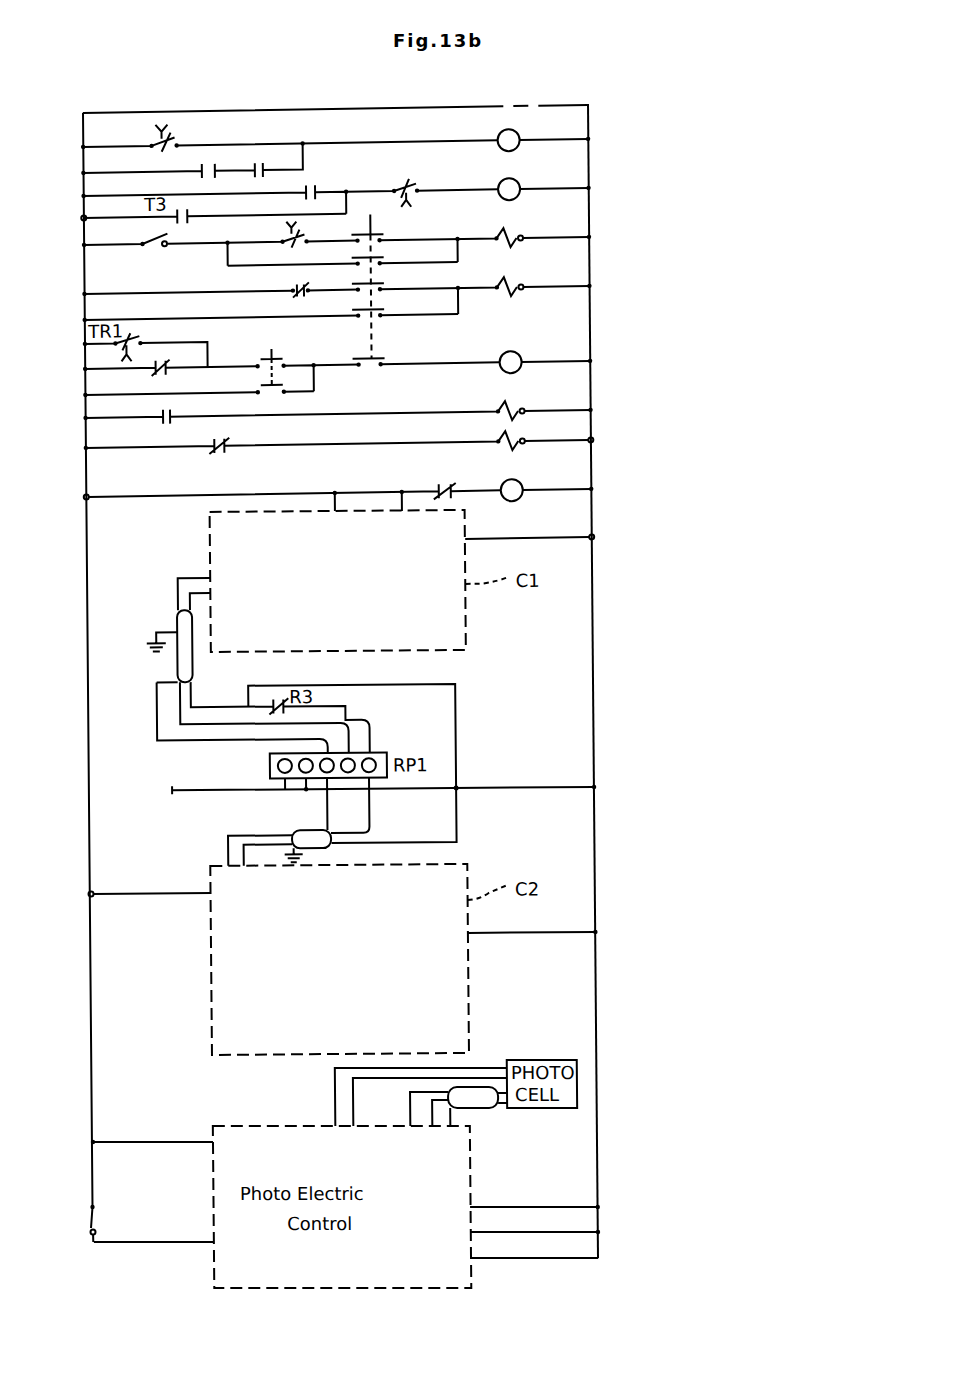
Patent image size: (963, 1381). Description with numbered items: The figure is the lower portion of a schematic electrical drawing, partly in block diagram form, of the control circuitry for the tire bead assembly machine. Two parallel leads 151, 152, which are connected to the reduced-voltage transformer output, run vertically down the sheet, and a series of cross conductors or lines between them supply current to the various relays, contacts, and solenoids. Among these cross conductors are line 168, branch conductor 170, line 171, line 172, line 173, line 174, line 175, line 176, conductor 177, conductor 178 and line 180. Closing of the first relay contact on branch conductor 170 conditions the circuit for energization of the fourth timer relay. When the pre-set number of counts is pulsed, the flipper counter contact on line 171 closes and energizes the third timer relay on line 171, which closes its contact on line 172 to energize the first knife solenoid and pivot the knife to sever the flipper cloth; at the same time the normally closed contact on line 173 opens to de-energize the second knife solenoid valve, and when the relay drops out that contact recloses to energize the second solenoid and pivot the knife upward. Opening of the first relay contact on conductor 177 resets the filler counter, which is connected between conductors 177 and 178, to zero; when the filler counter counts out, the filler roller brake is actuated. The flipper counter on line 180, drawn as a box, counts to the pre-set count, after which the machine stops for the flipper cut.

The parallel lead 151 is at (83, 124).
The parallel lead 152 is at (588, 125).
The cross conductor 168 is at (350, 147).
The branch conductor 170 is at (149, 173).
The line 171 is at (443, 196).
The line 172 is at (220, 231).
The line 173 is at (192, 294).
The cross conductor 174 is at (430, 369).
The cross conductor 175 is at (337, 418).
The cross conductor 176 is at (390, 448).
The conductor 177 is at (263, 474).
The conductor 178 is at (516, 545).
The line 180 is at (517, 936).